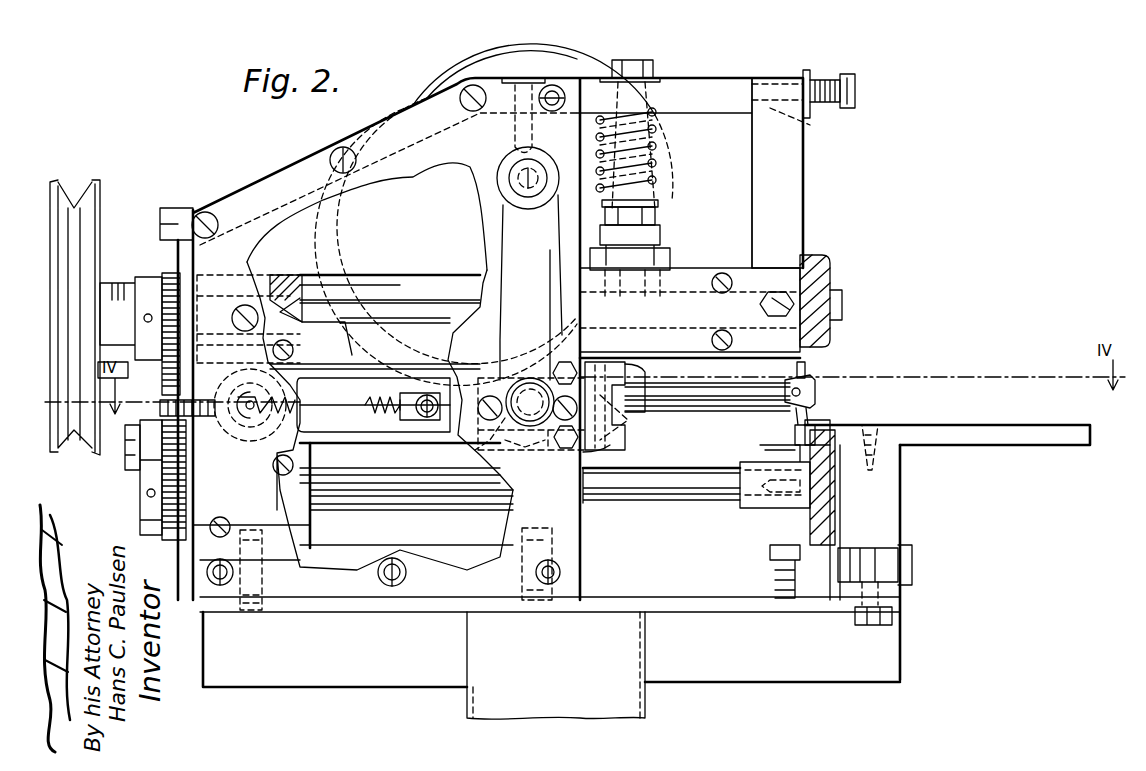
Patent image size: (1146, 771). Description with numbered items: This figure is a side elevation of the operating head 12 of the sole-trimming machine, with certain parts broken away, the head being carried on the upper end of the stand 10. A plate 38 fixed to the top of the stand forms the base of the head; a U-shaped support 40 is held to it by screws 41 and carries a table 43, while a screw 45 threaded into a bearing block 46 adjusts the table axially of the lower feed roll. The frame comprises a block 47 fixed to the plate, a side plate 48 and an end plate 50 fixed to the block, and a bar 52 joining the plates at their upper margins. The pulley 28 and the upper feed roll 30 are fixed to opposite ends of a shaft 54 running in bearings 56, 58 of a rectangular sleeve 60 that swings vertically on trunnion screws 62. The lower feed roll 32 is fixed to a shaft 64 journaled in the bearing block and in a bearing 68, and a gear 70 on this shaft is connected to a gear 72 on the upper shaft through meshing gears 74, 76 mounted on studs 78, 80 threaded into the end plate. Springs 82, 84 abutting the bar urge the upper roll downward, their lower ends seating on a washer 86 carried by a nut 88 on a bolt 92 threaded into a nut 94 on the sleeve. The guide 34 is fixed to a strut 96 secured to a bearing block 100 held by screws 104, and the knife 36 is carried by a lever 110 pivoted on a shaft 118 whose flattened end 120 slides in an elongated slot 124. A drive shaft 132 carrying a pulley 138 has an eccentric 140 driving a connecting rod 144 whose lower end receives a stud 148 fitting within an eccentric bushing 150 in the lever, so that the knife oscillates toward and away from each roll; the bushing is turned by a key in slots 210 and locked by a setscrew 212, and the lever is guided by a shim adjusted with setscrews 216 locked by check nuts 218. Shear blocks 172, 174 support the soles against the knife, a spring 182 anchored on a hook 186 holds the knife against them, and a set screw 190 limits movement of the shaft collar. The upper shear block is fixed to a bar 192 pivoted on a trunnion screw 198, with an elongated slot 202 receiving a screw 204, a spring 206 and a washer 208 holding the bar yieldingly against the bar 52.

The stand 10 is at (650, 705).
The operating head 12 is at (852, 196).
The pulley 28 is at (62, 186).
The upper feed roll 30 is at (818, 258).
The lower feed roll 32 is at (838, 525).
The guide 34 is at (828, 396).
The knife 36 is at (830, 420).
The plate 38 is at (684, 596).
The U-shaped support 40 is at (888, 505).
The screws 41 is at (876, 620).
The table 43 is at (1068, 433).
The screw 45 is at (905, 568).
The bearing block 46 is at (768, 526).
The block 47 is at (436, 545).
The side plate 48 is at (272, 190).
The end plate 50 is at (222, 590).
The bar 52 is at (590, 85).
The shaft 54 is at (352, 308).
The bearing 56 is at (310, 280).
The bearing 58 is at (690, 342).
The rectangular sleeve 60 is at (680, 268).
The trunnion screws 62 is at (232, 318).
The shaft 64 is at (690, 478).
The bearing 68 is at (300, 458).
The gear 70 is at (140, 500).
The gear 72 is at (148, 276).
The gear 74 is at (236, 392).
The gear 76 is at (140, 428).
The stud 78 is at (132, 368).
The stud 80 is at (126, 462).
The spring 82 is at (660, 130).
The spring 84 is at (660, 152).
The washer 86 is at (660, 200).
The nut 88 is at (656, 212).
The bolt 92 is at (648, 60).
The nut 94 is at (592, 262).
The strut 96 is at (734, 414).
The bearing block 100 is at (612, 448).
The screws 104 is at (480, 400).
The lever 110 is at (370, 368).
The shaft 118 is at (304, 390).
The reduced flattened end 120 is at (304, 422).
The elongated slot 124 is at (244, 432).
The drive shaft 132 is at (514, 180).
The pulley 138 is at (503, 62).
The eccentric 140 is at (542, 162).
The connecting rod 144 is at (512, 228).
The stud 148 is at (506, 382).
The eccentric bushing 150 is at (524, 447).
The upper shear block 172 is at (796, 366).
The lower shear block 174 is at (795, 435).
The spring 182 is at (382, 400).
The hook 186 is at (434, 422).
The set screw 190 is at (215, 414).
The bar 192 is at (790, 160).
The trunnion screw 198 is at (798, 305).
The elongated slot 202 is at (812, 124).
The screw 204 is at (856, 88).
The spring 206 is at (826, 80).
The washer 208 is at (805, 70).
The slots 210 is at (532, 380).
The setscrew 212 is at (632, 414).
The setscrews 216 is at (590, 362).
The check nuts 218 is at (566, 362).